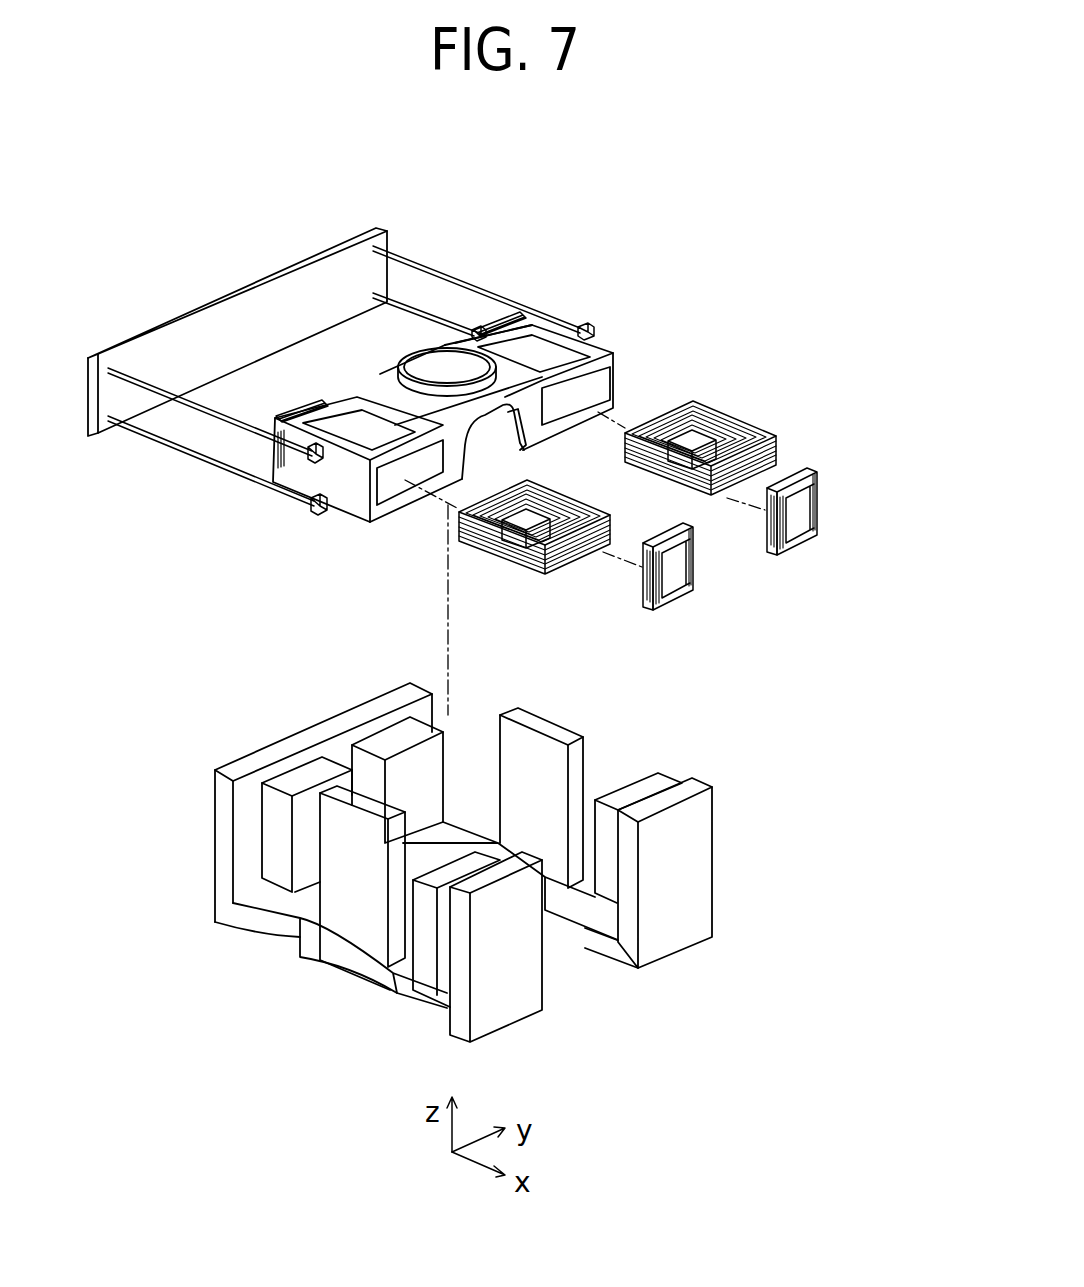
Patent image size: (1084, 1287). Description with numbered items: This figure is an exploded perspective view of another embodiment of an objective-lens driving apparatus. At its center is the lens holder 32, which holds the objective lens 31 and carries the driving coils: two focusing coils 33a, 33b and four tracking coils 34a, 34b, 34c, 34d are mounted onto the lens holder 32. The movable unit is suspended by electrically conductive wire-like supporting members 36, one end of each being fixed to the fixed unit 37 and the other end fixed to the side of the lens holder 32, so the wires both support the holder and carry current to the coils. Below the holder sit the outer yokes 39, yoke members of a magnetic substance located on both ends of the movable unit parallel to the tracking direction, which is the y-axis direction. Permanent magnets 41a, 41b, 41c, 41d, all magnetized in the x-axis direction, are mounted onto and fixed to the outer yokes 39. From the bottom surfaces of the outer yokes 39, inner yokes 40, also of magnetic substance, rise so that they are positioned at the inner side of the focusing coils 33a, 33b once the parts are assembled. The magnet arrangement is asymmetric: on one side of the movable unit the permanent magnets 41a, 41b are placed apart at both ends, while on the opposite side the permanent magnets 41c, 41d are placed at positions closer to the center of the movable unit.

The objective lens 31 is at (455, 362).
The lens holder 32 is at (612, 338).
The focusing coil 33a is at (503, 545).
The focusing coil 33b is at (723, 435).
The tracking coil 34a is at (697, 593).
The tracking coil 34b is at (825, 535).
The tracking coil 34c is at (315, 405).
The tracking coil 34d is at (517, 313).
The wire-like supporting member 36 is at (410, 303).
The fixed unit 37 is at (225, 330).
The outer yoke 39 is at (700, 852).
The inner yoke 40 is at (545, 728).
The permanent magnet 41a is at (428, 960).
The permanent magnet 41b is at (643, 788).
The permanent magnet 41c is at (298, 778).
The permanent magnet 41d is at (387, 740).